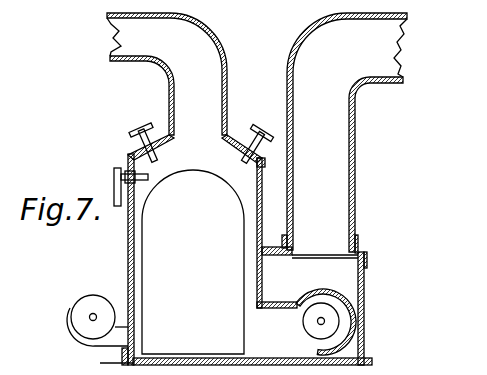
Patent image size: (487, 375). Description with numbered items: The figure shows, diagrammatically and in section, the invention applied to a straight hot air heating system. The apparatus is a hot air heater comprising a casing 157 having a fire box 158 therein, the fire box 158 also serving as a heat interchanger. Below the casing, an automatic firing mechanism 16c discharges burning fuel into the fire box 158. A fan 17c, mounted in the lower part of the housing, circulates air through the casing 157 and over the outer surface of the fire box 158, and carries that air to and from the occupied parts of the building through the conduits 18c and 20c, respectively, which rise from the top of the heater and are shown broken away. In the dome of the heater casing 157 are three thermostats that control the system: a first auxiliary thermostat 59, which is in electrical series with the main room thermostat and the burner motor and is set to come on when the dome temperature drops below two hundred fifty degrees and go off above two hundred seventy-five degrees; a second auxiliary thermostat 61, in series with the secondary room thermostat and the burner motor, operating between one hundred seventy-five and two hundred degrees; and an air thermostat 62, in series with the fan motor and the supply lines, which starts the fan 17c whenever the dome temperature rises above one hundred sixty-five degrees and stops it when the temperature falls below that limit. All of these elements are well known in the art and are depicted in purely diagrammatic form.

The conduit 18c is at (206, 55).
The conduit 20c is at (311, 26).
The casing 157 is at (128, 228).
The fire box 158 is at (143, 252).
The first auxiliary thermostat 59 is at (114, 176).
The second auxiliary thermostat 61 is at (145, 124).
The air thermostat 62 is at (257, 119).
The automatic firing mechanism 16c is at (82, 313).
The fan 17c is at (350, 350).